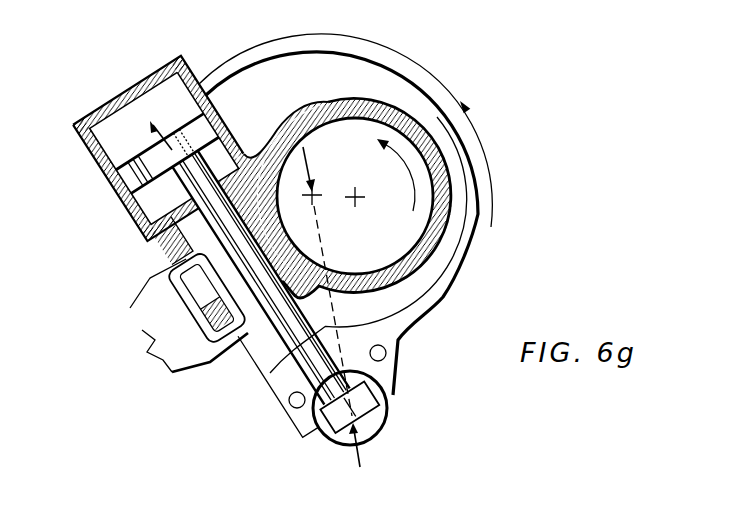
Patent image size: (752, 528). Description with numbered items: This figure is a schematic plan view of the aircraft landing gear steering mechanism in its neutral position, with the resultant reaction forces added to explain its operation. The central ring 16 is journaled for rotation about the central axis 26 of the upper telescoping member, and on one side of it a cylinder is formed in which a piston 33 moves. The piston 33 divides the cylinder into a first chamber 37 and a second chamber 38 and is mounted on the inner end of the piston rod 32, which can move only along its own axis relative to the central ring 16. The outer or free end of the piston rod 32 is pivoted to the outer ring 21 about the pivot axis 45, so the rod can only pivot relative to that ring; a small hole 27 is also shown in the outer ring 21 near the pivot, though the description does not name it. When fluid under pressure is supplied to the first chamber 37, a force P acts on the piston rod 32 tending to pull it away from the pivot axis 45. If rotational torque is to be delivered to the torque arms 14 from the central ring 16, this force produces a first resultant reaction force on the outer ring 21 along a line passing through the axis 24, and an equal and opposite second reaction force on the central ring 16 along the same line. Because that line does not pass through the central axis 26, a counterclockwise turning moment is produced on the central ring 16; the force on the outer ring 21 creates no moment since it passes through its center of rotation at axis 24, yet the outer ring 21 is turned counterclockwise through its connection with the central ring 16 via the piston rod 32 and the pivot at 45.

The torque arms 14 is at (152, 300).
The central ring 16 is at (327, 100).
The outer ring 21 is at (427, 300).
The axis 24 is at (306, 198).
The central axis 26 is at (358, 200).
The hole 27 is at (290, 410).
The piston rod 32 is at (265, 377).
The piston 33 is at (120, 180).
The first chamber 37 is at (160, 203).
The second chamber 38 is at (117, 137).
The pivot axis 45 is at (367, 410).